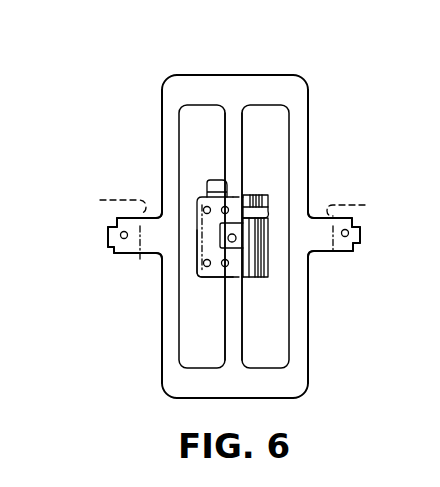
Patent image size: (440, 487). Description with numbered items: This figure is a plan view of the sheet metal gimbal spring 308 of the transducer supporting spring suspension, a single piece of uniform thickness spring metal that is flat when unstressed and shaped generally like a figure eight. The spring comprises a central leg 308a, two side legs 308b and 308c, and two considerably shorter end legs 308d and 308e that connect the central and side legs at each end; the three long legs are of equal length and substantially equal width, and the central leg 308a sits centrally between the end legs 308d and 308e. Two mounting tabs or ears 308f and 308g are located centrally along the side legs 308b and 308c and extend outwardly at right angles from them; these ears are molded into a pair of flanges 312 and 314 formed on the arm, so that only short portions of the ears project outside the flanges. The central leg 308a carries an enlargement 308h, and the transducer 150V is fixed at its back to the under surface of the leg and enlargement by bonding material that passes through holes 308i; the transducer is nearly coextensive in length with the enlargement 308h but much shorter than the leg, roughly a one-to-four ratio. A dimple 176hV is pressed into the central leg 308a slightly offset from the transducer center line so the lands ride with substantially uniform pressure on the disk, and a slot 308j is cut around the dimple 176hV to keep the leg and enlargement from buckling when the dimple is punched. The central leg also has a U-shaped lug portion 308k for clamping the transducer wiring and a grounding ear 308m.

The gimbal spring 308 is at (195, 71).
The central leg 308a is at (237, 333).
The side leg 308b is at (167, 345).
The side leg 308c is at (302, 294).
The end leg 308d is at (281, 83).
The end leg 308e is at (290, 382).
The mounting ear 308f is at (117, 218).
The mounting ear 308g is at (352, 218).
The enlargement 308h is at (197, 250).
The holes 308i is at (202, 205).
The slot 308j is at (246, 252).
The U-shaped lug portion 308k is at (213, 183).
The grounding ear 308m is at (266, 212).
The transducer 150V is at (255, 196).
The dimple 176hV is at (237, 236).
The flange 312 is at (100, 202).
The flange 314 is at (365, 205).